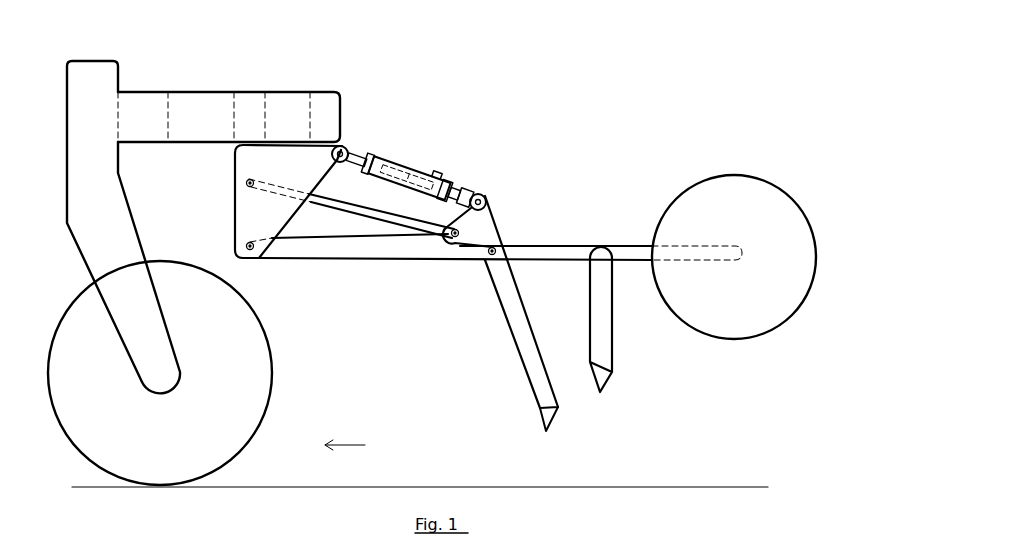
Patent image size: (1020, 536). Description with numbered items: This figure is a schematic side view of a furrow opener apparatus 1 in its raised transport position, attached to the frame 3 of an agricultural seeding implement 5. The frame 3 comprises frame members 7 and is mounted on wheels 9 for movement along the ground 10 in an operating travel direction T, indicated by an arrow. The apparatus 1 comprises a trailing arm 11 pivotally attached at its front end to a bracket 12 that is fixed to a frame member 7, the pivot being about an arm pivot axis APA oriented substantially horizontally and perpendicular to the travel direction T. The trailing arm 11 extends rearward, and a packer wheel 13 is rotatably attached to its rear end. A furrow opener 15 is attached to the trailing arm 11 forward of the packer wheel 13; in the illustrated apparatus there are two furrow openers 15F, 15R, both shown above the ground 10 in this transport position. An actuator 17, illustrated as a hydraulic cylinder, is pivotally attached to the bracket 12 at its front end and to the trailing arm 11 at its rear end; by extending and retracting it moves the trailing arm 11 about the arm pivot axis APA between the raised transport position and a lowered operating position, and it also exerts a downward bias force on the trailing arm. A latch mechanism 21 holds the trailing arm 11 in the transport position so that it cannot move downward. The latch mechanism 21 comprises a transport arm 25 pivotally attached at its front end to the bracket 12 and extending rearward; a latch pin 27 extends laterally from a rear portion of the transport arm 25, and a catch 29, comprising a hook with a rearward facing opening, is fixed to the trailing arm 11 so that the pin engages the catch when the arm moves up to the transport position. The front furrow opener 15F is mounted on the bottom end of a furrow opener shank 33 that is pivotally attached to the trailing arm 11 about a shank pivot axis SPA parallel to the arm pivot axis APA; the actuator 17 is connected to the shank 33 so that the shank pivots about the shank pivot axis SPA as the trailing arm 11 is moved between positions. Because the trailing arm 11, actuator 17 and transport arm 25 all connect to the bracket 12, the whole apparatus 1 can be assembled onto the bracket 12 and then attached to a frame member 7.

The furrow opener apparatus 1 is at (560, 120).
The frame 3 is at (123, 203).
The frame member 7 is at (82, 61).
The agricultural seeding implement 5 is at (180, 60).
The wheels 9 is at (272, 370).
The ground 10 is at (623, 487).
The trailing arm 11 is at (357, 257).
The bracket 12 is at (308, 157).
The packer wheel 13 is at (733, 177).
The furrow opener 15 is at (597, 418).
The front furrow opener 15F is at (556, 432).
The rear furrow opener 15R is at (610, 390).
The actuator 17 is at (441, 178).
The latch mechanism 21 is at (432, 233).
The transport arm 25 is at (414, 151).
The latch pin 27 is at (505, 226).
The catch 29 is at (450, 240).
The furrow opener shank 33 is at (563, 315).
The arm pivot axis APA is at (250, 249).
The shank pivot axis SPA is at (503, 245).
The operating travel direction T is at (345, 457).